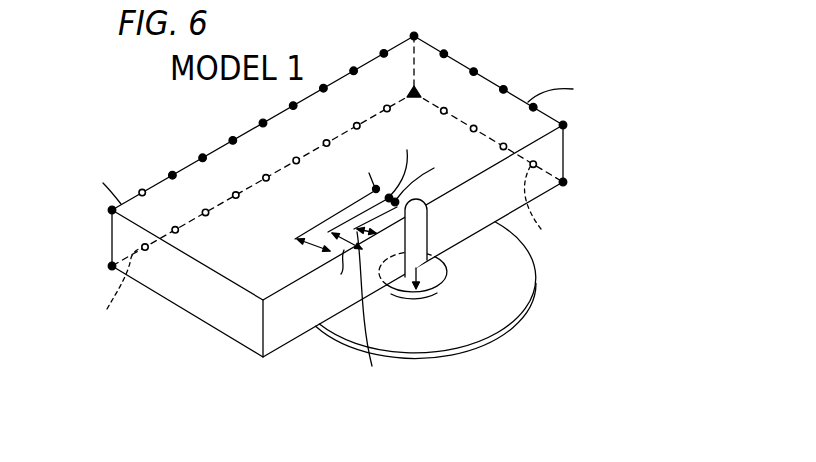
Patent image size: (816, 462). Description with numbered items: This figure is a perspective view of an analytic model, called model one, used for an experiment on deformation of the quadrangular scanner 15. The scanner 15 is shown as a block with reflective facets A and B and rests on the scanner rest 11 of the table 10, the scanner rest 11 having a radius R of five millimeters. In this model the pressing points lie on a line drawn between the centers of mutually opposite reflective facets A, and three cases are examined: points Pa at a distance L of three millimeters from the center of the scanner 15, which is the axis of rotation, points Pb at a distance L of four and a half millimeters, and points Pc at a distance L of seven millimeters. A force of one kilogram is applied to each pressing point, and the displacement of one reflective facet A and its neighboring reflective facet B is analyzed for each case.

The table 10 is at (510, 302).
The scanner rest 11 is at (449, 268).
The scanner 15 is at (198, 291).